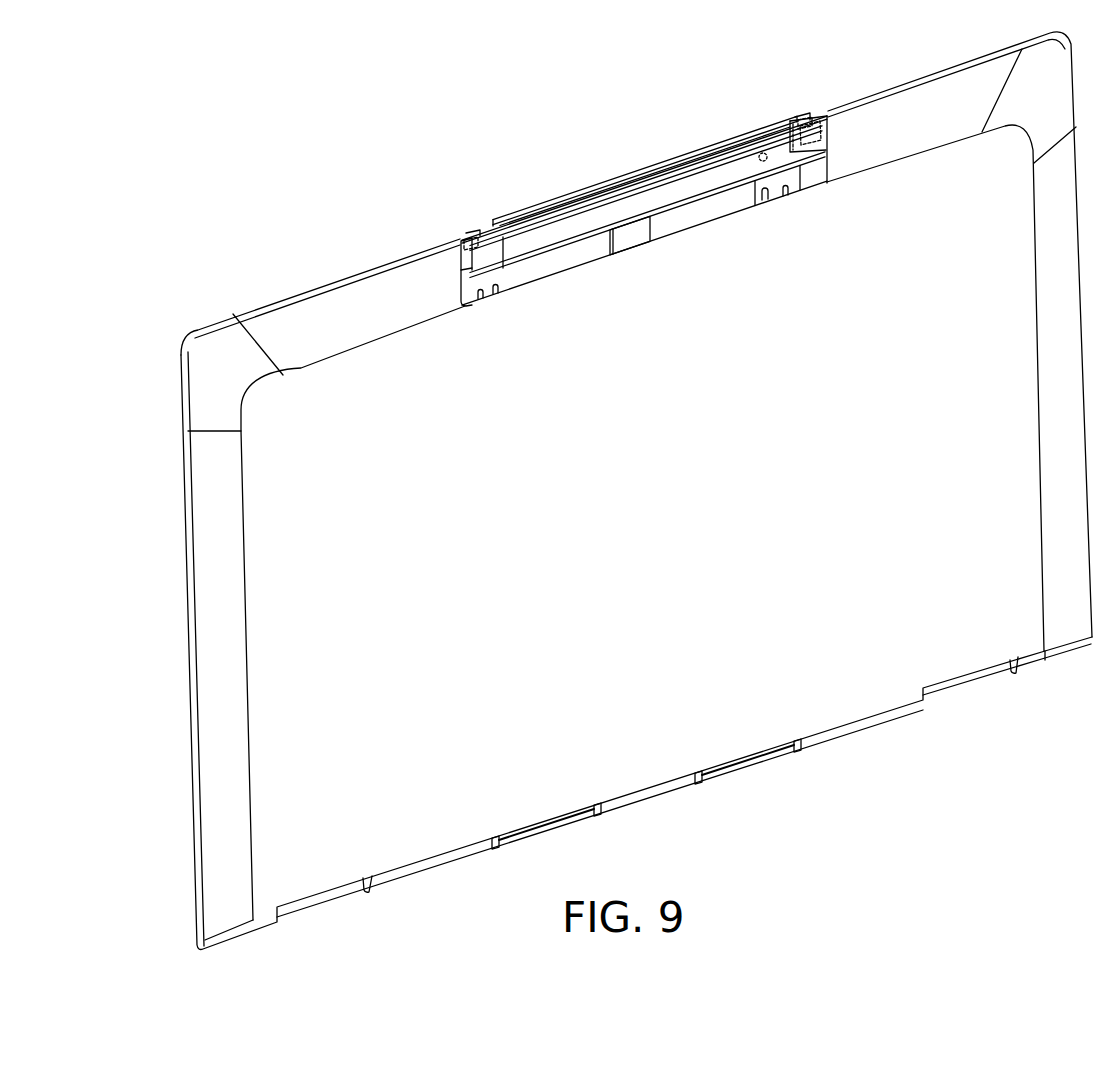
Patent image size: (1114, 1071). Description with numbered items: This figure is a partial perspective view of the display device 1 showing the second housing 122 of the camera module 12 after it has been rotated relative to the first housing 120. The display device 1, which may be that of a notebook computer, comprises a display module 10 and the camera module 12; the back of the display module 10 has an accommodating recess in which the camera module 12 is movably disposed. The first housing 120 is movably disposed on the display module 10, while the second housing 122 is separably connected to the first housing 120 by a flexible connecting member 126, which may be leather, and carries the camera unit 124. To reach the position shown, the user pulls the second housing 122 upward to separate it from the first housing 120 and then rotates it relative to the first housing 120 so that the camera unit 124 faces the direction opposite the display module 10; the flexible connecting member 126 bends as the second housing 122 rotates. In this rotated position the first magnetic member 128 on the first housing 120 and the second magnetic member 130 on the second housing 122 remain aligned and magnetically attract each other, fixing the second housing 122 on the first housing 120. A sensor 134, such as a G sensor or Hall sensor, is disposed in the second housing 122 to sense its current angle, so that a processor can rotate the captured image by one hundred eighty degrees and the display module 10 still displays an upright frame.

The display device 1 is at (364, 121).
The display module 10 is at (298, 287).
The camera module 12 is at (648, 236).
The first housing 120 is at (815, 120).
The second housing 122 is at (710, 197).
The camera unit 124 is at (565, 230).
The flexible connecting member 126 is at (668, 165).
The first magnetic member 128 is at (472, 230).
The second magnetic member 130 is at (483, 262).
The sensor 134 is at (767, 163).